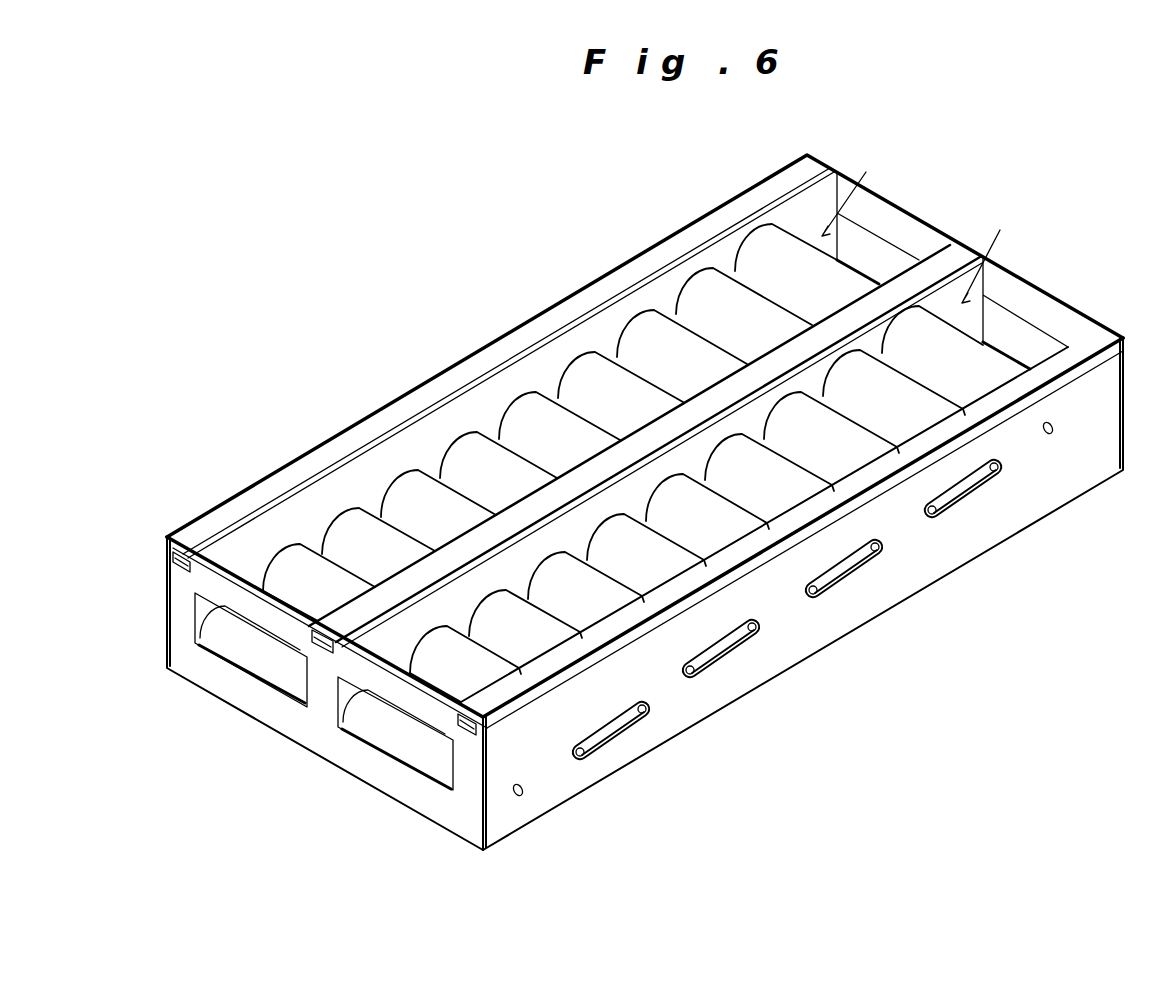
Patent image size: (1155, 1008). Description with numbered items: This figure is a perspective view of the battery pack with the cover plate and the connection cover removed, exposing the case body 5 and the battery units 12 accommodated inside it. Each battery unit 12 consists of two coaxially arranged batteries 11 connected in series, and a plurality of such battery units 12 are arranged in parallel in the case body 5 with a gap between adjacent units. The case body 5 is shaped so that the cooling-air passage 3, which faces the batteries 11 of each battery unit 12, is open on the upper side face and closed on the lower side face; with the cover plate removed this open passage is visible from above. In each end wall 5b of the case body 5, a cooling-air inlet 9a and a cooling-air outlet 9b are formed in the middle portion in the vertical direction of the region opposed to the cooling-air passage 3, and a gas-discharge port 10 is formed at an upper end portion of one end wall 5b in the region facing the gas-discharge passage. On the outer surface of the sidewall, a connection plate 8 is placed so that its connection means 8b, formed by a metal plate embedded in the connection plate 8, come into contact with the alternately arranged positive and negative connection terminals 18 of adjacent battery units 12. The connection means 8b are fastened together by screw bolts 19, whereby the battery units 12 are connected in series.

The cooling-air passage 3 is at (894, 171).
The case body 5 is at (500, 357).
The end wall 5b is at (1020, 280).
The connection plate 8 is at (300, 458).
The connection means 8b is at (605, 737).
The cooling-air inlet 9a is at (232, 659).
The cooling-air outlet 9b is at (876, 258).
The gas-discharge port 10 is at (178, 562).
The battery 11 is at (477, 452).
The battery unit 12 is at (580, 348).
The connection terminal 18 is at (522, 797).
The screw bolt 19 is at (583, 758).